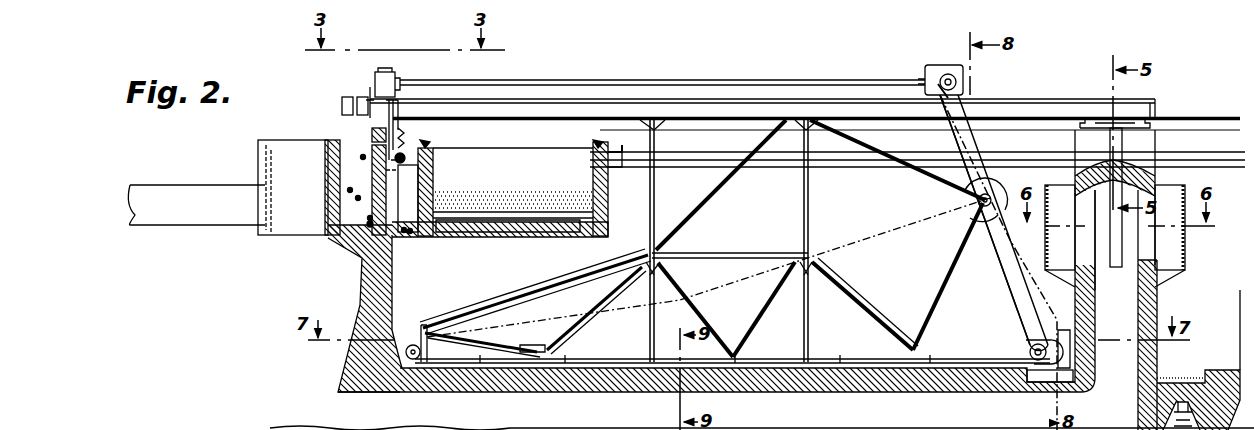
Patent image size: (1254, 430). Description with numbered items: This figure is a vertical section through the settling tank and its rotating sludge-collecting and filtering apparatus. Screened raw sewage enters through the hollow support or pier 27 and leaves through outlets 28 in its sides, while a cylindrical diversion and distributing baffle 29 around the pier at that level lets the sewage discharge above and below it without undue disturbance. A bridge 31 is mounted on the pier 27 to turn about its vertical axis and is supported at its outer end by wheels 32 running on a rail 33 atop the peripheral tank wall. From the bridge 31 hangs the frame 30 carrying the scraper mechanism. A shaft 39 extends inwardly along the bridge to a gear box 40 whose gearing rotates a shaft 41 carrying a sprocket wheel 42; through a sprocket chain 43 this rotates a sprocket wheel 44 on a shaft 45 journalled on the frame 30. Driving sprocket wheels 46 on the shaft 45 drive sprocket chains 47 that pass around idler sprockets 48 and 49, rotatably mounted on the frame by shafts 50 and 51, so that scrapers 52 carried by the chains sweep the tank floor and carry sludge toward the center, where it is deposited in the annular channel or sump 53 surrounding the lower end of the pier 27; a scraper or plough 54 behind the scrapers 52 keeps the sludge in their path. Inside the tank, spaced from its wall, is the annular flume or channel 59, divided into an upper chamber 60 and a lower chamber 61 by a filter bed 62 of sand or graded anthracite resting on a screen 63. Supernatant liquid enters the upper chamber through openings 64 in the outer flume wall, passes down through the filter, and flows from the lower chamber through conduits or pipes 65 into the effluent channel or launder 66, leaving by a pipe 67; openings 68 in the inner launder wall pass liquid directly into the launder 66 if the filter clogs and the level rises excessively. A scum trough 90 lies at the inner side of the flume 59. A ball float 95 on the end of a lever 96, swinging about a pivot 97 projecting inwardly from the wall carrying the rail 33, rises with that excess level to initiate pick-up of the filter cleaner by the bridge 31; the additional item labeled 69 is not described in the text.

The hollow support or pier 27 is at (1160, 303).
The outlets 28 is at (1150, 244).
The cylindrical diversion and distributing baffle 29 is at (1185, 258).
The frame 30 is at (825, 193).
The bridge 31 is at (634, 99).
The wheels 32 is at (372, 123).
The rail 33 is at (375, 132).
The shaft 39 is at (762, 80).
The gear box 40 is at (936, 66).
The shaft 41 is at (958, 80).
The sprocket wheel 42 is at (950, 72).
The sprocket chain 43 is at (985, 118).
The sprocket wheel 44 is at (992, 198).
The shaft 45 is at (976, 230).
The driving sprocket wheels 46 is at (995, 180).
The sprocket chains 47 is at (718, 275).
The idler sprocket 48 is at (410, 360).
The idler sprocket 49 is at (1024, 342).
The shaft 50 is at (410, 345).
The shaft 51 is at (1062, 332).
The scrapers 52 is at (568, 325).
The annular channel or sump 53 is at (1068, 395).
The scraper or plough 54 is at (865, 330).
The annular flume or channel 59 is at (610, 185).
The upper chamber 60 is at (498, 168).
The lower chamber 61 is at (596, 216).
The filter bed 62 is at (490, 195).
The screen 63 is at (538, 210).
The openings 64 is at (420, 176).
The conduits or pipes 65 is at (368, 246).
The effluent channel or launder 66 is at (330, 190).
The pipe 67 is at (230, 230).
The openings 68 is at (378, 158).
The bolt 69 is at (430, 142).
The scum trough 90 is at (618, 152).
The ball float 95 is at (396, 160).
The lever 96 is at (405, 130).
The pivot 97 is at (405, 128).